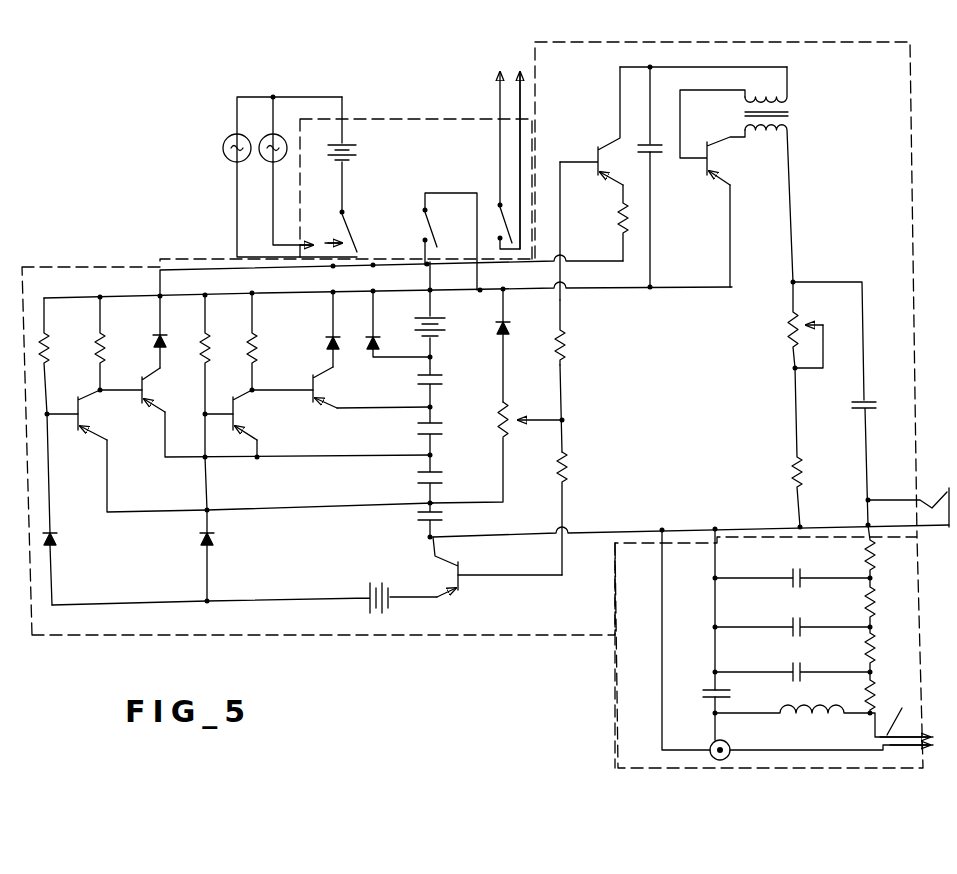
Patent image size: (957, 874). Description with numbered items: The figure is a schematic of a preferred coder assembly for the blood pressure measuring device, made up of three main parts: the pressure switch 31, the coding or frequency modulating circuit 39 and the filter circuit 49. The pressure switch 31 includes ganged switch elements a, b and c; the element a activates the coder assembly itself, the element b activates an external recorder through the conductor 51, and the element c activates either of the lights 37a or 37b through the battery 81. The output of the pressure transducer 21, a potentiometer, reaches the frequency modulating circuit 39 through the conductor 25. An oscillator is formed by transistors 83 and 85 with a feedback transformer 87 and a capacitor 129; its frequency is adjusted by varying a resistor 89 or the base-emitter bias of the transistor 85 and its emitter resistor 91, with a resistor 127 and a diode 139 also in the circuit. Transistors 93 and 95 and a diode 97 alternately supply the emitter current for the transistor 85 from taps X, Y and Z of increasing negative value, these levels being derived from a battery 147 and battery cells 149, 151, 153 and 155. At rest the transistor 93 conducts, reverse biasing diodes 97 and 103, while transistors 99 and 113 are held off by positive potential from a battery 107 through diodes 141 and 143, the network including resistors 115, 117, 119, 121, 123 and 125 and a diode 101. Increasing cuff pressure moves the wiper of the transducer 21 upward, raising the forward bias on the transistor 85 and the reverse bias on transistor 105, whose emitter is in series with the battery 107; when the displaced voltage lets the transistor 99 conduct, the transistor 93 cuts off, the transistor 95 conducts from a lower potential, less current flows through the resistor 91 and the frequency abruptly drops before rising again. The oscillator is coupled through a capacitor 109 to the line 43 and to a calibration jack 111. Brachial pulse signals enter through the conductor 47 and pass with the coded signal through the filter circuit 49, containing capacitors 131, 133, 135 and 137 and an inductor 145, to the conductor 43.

The pressure transducer 21 is at (500, 412).
The conductor 25 is at (508, 492).
The pressure switch 31 is at (378, 119).
The light 37a is at (270, 133).
The light 37b is at (222, 148).
The frequency modulating circuit 39 is at (206, 636).
The conductor 43 is at (831, 719).
The conductor 47 is at (720, 760).
The filter circuit 49 is at (615, 652).
The conductor 51 is at (519, 72).
The battery 81 is at (357, 152).
The transistor 83 is at (712, 160).
The transistor 85 is at (596, 155).
The feedback transformer 87 is at (790, 106).
The resistor 89 is at (790, 328).
The resistor 91 is at (618, 220).
The transistor 93 is at (150, 390).
The transistor 95 is at (330, 390).
The diode 97 is at (375, 336).
The transistor 99 is at (90, 420).
The diode 101 is at (157, 344).
The diode 103 is at (327, 345).
The transistor 105 is at (454, 577).
The battery 107 is at (366, 594).
The capacitor 109 is at (870, 400).
The calibration jack 111 is at (895, 498).
The transistor 113 is at (242, 420).
The resistor 115 is at (50, 342).
The resistor 117 is at (107, 342).
The resistor 119 is at (211, 342).
The resistor 121 is at (260, 342).
The resistor 123 is at (566, 344).
The resistor 125 is at (570, 466).
The resistor 127 is at (805, 472).
The capacitor 129 is at (658, 158).
The capacitor 131 is at (803, 575).
The capacitor 133 is at (805, 624).
The capacitor 135 is at (805, 669).
The capacitor 137 is at (712, 686).
The diode 139 is at (498, 330).
The diode 141 is at (58, 540).
The diode 143 is at (215, 540).
The inductor 145 is at (806, 710).
The battery 147 is at (440, 320).
The battery 149 is at (444, 382).
The battery 151 is at (444, 432).
The battery 153 is at (444, 480).
The battery 155 is at (443, 517).
The switch element a is at (430, 214).
The switch element b is at (500, 205).
The switch element c is at (350, 218).
The tap X is at (432, 456).
The tap Y is at (432, 408).
The tap Z is at (432, 358).